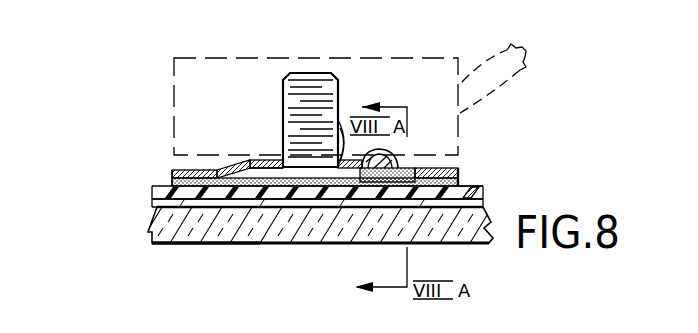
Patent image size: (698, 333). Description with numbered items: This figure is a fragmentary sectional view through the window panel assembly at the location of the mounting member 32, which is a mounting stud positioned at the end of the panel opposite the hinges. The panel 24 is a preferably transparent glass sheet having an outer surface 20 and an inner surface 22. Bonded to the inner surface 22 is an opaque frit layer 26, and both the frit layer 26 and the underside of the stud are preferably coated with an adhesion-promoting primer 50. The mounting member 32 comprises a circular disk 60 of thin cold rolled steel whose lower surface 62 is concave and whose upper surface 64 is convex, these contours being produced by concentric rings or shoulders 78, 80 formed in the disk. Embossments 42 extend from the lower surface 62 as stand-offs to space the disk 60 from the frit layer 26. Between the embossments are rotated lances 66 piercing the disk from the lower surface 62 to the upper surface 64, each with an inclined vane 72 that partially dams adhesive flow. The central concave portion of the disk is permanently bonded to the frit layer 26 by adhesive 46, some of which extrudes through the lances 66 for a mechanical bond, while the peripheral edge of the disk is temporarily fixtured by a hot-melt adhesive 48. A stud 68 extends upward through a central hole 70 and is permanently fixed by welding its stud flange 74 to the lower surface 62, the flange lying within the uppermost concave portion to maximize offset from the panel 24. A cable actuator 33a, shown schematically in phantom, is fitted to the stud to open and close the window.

The outer surface 20 is at (203, 247).
The inner surface 22 is at (147, 230).
The panel 24 is at (170, 247).
The frit layer 26 is at (153, 203).
The mounting member 32 is at (256, 74).
The cable actuator 33a is at (222, 78).
The embossments 42 is at (218, 175).
The adhesive 46 is at (425, 158).
The hot-melt adhesive 48 is at (462, 180).
The adhesion-promoting primer 50 is at (153, 192).
The disk 60 is at (230, 162).
The lower surface 62 is at (227, 160).
The upper surface 64 is at (462, 170).
The rotated lances 66 is at (349, 165).
The stud 68 is at (338, 122).
The hole 70 is at (340, 155).
The vane 72 is at (413, 167).
The stud flange 74 is at (249, 155).
The concentric ring 78 is at (247, 163).
The concentric shoulder 80 is at (274, 180).